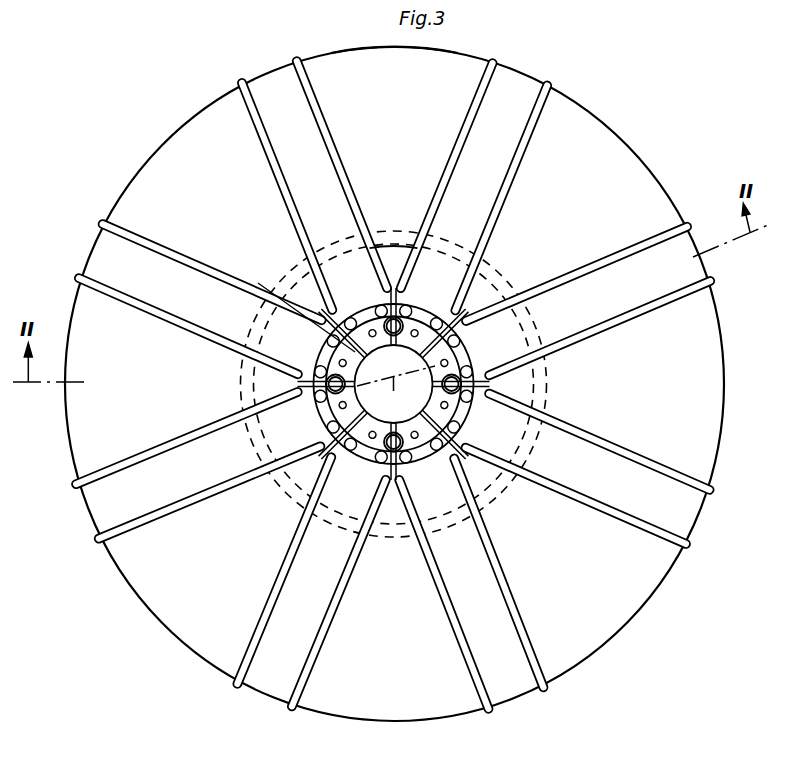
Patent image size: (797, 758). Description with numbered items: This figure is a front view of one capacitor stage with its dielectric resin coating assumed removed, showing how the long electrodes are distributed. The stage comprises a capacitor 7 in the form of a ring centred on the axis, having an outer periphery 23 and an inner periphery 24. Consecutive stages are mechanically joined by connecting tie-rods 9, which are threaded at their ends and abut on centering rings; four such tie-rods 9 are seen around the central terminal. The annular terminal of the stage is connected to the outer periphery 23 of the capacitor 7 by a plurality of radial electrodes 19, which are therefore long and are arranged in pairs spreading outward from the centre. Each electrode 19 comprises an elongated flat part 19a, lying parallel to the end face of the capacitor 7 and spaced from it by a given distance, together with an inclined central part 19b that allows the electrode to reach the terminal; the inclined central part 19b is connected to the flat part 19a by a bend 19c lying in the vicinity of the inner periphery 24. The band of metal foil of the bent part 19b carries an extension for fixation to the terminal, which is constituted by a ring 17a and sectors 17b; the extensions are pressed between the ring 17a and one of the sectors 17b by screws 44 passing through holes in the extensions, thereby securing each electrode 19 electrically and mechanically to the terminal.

The capacitor 7 is at (319, 698).
The connecting tie-rod 9 is at (462, 293).
The ring 17a is at (303, 300).
The sector 17b is at (365, 310).
The radial electrode 19 is at (290, 170).
The elongated flat part 19a is at (647, 308).
The inclined central part 19b is at (343, 468).
The bend 19c is at (483, 242).
The outer periphery 23 is at (349, 48).
The inner periphery 24 is at (404, 243).
The screw 44 is at (455, 346).